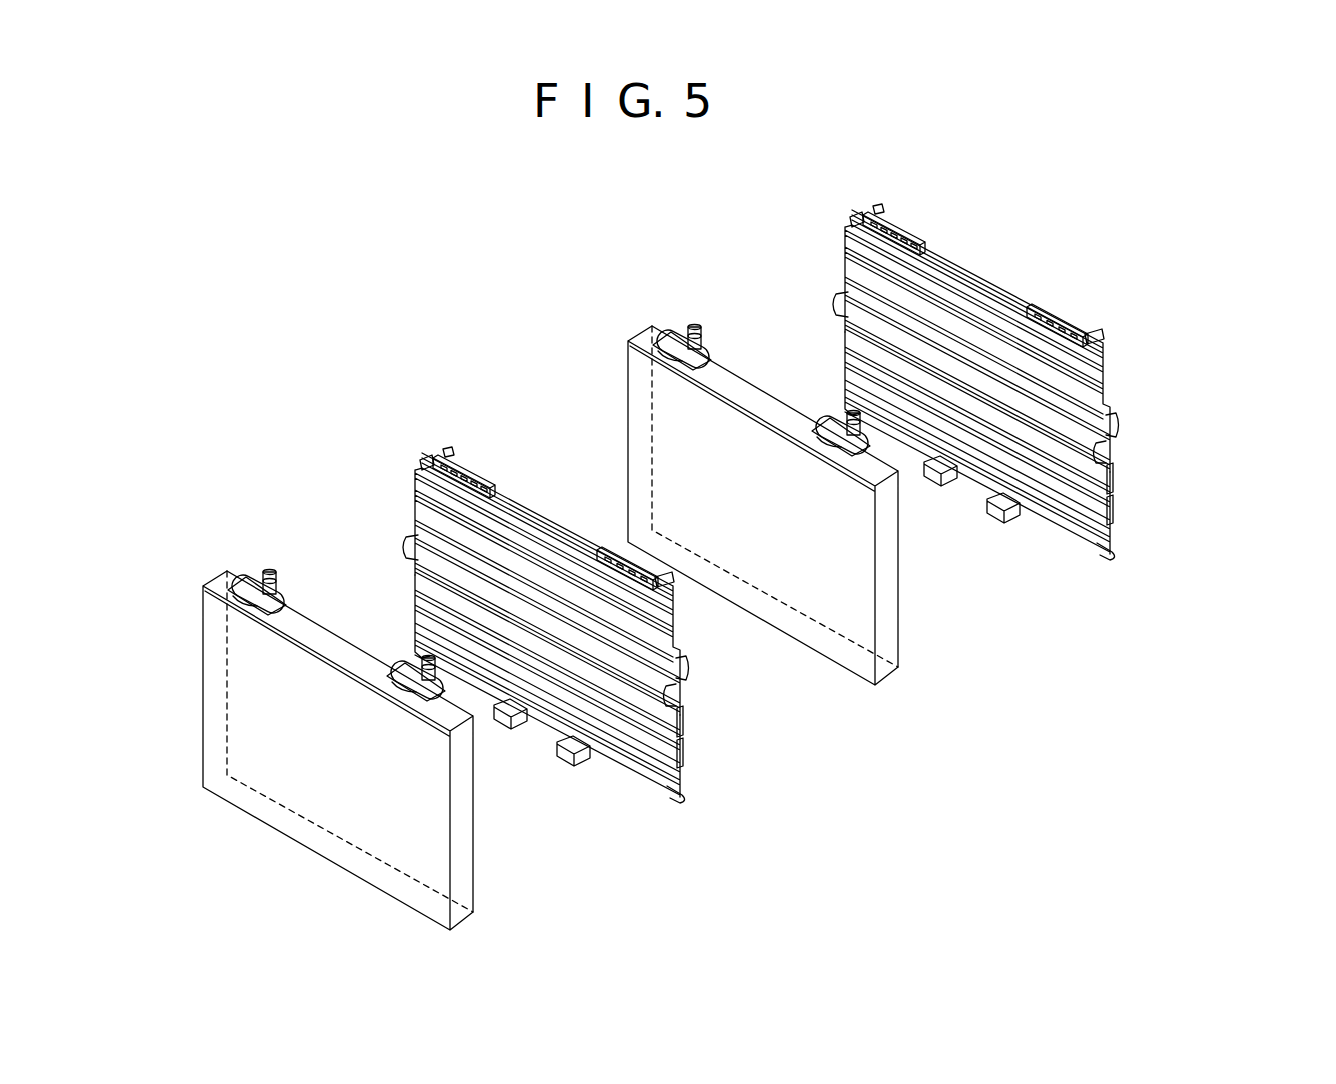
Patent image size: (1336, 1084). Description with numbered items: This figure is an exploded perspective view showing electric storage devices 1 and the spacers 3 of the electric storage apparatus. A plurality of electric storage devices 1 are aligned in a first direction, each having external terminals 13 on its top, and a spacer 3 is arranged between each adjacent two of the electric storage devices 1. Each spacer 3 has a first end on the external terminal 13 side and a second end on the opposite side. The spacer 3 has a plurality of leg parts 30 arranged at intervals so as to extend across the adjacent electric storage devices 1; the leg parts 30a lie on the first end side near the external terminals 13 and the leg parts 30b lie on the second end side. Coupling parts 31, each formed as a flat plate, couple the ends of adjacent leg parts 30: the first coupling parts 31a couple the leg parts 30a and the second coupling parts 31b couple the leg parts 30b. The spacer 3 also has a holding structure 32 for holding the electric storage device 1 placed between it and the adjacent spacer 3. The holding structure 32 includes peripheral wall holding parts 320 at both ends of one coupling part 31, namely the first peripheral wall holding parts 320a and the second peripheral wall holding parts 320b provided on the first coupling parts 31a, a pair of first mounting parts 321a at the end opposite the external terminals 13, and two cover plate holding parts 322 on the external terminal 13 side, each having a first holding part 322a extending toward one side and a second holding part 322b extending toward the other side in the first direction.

The electric storage device 1 is at (187, 660).
The external terminal 13 is at (395, 658).
The spacer 3 is at (626, 806).
The leg part 30 is at (836, 552).
The first-end-side leg part 30a is at (682, 664).
The second-end-side leg part 30b is at (668, 742).
The coupling part 31 is at (830, 526).
The first coupling part 31a is at (648, 652).
The second coupling part 31b is at (673, 797).
The holding structure 32 is at (841, 423).
The peripheral wall holding part 320 is at (793, 713).
The first peripheral wall holding part 320a is at (683, 676).
The second peripheral wall holding part 320b is at (684, 666).
The first mounting part 321a is at (560, 753).
The cover plate holding part 322 is at (490, 378).
The first holding part 322a is at (422, 460).
The second holding part 322b is at (450, 455).